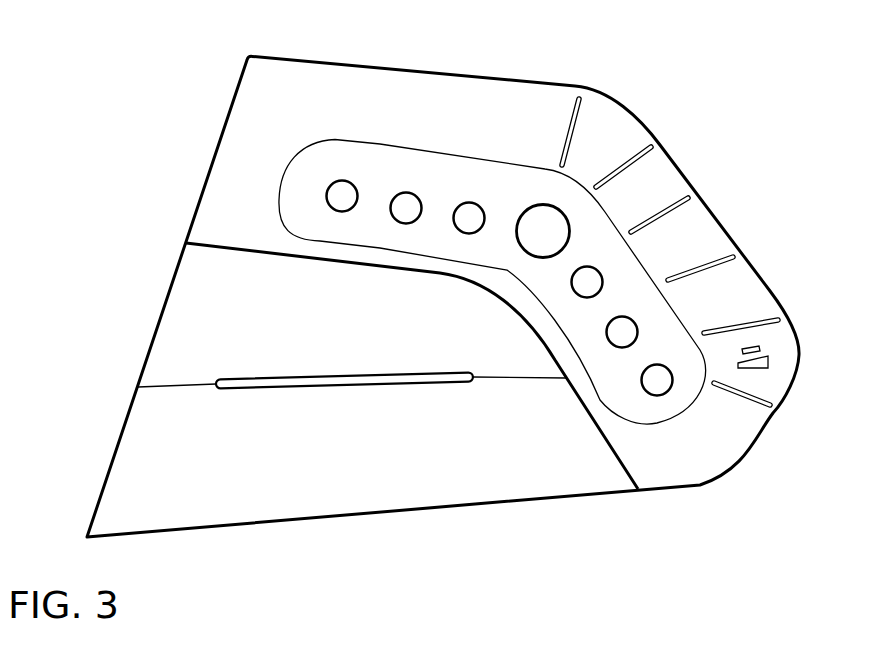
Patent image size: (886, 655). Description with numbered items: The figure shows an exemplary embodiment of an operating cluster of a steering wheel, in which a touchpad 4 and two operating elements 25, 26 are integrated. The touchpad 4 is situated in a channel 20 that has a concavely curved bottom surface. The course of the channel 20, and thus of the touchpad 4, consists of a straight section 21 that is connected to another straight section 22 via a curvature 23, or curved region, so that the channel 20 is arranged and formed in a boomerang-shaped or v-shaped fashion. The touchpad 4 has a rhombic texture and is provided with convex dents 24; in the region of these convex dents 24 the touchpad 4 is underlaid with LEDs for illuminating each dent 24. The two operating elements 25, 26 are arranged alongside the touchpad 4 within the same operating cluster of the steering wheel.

The touchpad 4 is at (660, 340).
The channel 20 is at (442, 154).
The straight section 21 is at (365, 172).
The straight section 22 is at (639, 283).
The curvature 23 is at (566, 198).
The convex dent 24 is at (545, 231).
The operating element 25 is at (211, 325).
The operating element 26 is at (159, 441).